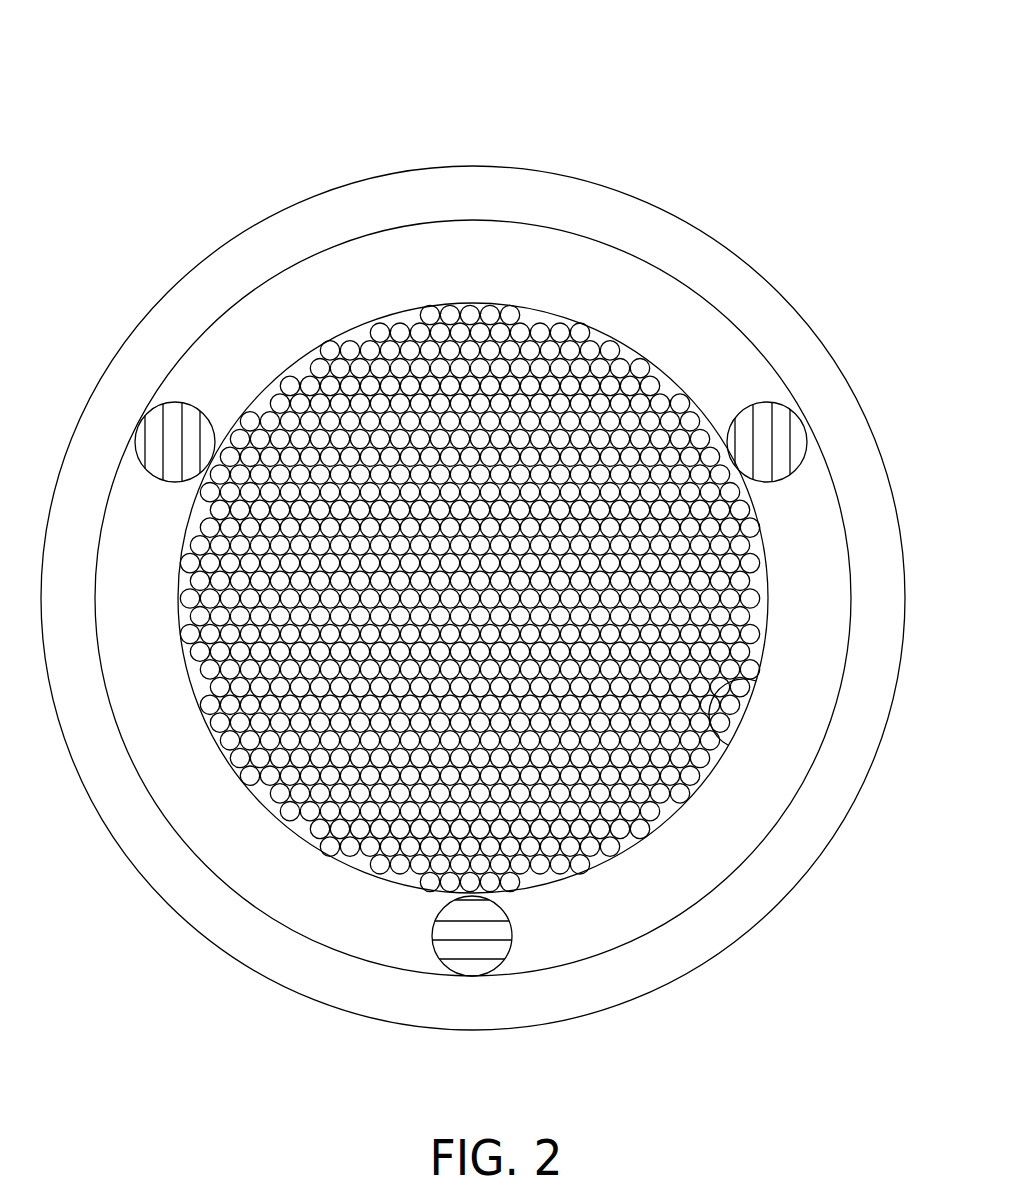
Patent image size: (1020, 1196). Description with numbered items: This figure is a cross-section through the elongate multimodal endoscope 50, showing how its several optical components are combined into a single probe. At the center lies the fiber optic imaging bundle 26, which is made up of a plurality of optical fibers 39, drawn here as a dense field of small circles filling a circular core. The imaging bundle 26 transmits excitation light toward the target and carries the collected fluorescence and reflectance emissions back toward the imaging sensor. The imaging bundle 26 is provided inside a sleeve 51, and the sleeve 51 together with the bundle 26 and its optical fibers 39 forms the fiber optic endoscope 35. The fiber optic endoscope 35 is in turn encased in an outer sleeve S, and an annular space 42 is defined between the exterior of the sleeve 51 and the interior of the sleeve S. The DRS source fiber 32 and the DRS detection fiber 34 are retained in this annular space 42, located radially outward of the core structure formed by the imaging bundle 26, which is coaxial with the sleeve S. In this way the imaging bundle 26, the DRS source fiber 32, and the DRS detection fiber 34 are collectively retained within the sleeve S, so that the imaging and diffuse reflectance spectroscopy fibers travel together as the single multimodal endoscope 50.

The fiber optic imaging bundle 26 is at (478, 598).
The DRS source fiber 32 is at (158, 443).
The DRS detection fiber 34 is at (458, 953).
The fiber optic endoscope 35 is at (420, 303).
The optical fibers 39 is at (340, 372).
The annular space 42 is at (680, 878).
The multimodal endoscope 50 is at (517, 143).
The sleeve 51 is at (728, 750).
The sleeve S is at (195, 926).